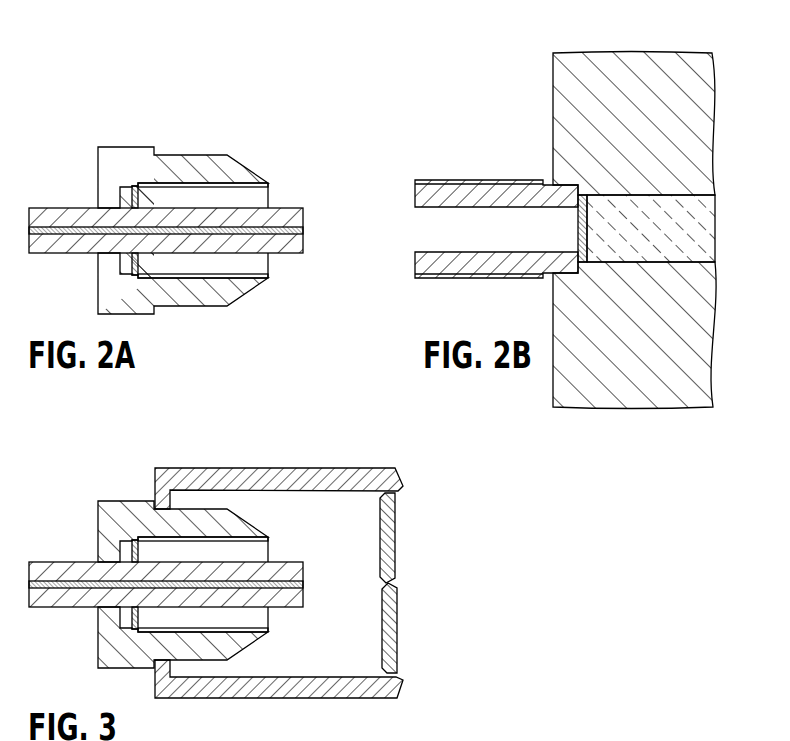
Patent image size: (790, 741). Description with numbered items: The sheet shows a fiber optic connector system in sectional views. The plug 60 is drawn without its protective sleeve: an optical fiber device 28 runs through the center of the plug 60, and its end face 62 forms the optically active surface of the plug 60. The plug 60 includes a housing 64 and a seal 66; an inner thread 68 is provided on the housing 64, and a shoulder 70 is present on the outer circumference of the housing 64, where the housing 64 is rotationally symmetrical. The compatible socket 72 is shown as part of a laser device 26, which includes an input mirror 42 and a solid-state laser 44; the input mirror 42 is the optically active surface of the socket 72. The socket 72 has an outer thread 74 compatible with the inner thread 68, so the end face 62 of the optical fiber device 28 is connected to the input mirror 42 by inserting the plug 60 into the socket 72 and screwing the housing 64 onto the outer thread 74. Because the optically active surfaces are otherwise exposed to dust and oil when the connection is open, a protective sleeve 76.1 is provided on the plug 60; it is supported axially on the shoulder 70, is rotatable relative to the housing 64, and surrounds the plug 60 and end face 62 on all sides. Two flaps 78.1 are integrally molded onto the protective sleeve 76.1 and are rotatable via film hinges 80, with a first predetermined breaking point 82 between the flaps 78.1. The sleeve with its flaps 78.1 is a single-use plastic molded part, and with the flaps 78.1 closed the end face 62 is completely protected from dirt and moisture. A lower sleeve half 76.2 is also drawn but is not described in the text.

In FIG. 2B, the laser device 26 is at (627, 425).
In FIG. 2A, the optical fiber device 28 is at (60, 228).
In FIG. 3, the optical fiber device 28 is at (60, 583).
In FIG. 2B, the input mirror 42 is at (578, 230).
In FIG. 2B, the solid-state laser 44 is at (682, 230).
In FIG. 2A, the plug 60 is at (203, 193).
In FIG. 2A, the end face 62 is at (203, 204).
In FIG. 3, the end face 62 is at (203, 557).
In FIG. 2A, the housing 64 is at (198, 168).
In FIG. 3, the housing 64 is at (108, 525).
In FIG. 2A, the seal 66 is at (134, 186).
In FIG. 3, the seal 66 is at (134, 540).
In FIG. 2A, the inner thread 68 is at (253, 268).
In FIG. 3, the inner thread 68 is at (252, 622).
In FIG. 2A, the shoulder 70 is at (165, 307).
In FIG. 2B, the socket 72 is at (589, 152).
In FIG. 2B, the outer thread 74 is at (473, 182).
In FIG. 3, the protective sleeve 76.1 is at (287, 480).
In FIG. 3, the lower housing shell 76.2 is at (302, 700).
In FIG. 3, the flaps 78.1 is at (388, 548).
In FIG. 3, the film hinges 80 is at (404, 487).
In FIG. 3, the first predetermined breaking point 82 is at (378, 583).